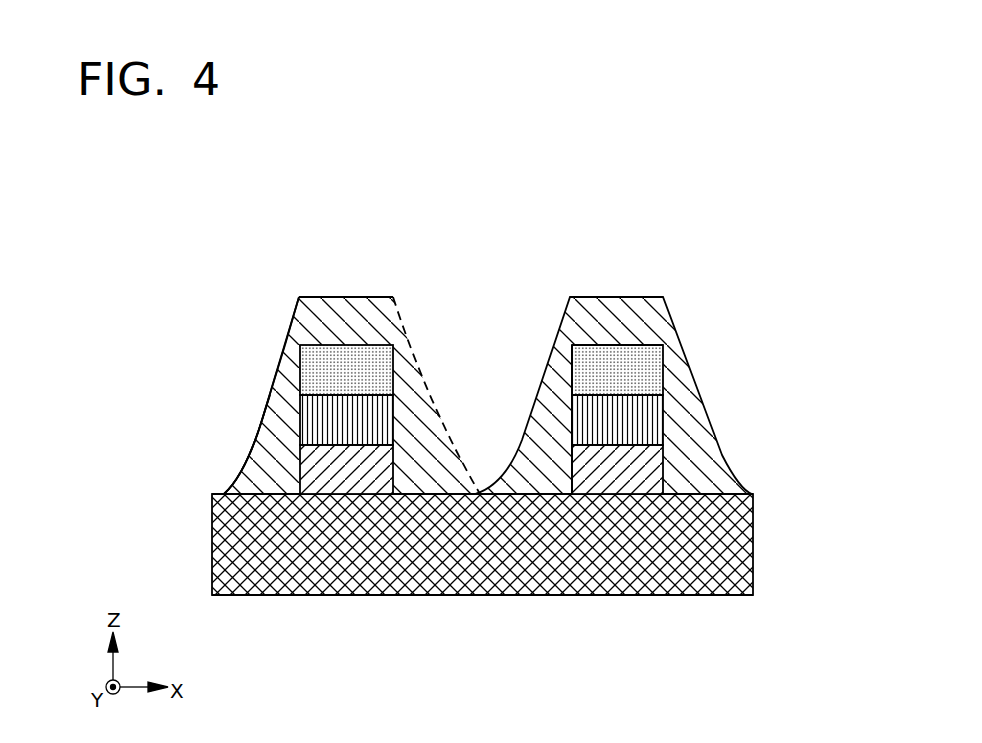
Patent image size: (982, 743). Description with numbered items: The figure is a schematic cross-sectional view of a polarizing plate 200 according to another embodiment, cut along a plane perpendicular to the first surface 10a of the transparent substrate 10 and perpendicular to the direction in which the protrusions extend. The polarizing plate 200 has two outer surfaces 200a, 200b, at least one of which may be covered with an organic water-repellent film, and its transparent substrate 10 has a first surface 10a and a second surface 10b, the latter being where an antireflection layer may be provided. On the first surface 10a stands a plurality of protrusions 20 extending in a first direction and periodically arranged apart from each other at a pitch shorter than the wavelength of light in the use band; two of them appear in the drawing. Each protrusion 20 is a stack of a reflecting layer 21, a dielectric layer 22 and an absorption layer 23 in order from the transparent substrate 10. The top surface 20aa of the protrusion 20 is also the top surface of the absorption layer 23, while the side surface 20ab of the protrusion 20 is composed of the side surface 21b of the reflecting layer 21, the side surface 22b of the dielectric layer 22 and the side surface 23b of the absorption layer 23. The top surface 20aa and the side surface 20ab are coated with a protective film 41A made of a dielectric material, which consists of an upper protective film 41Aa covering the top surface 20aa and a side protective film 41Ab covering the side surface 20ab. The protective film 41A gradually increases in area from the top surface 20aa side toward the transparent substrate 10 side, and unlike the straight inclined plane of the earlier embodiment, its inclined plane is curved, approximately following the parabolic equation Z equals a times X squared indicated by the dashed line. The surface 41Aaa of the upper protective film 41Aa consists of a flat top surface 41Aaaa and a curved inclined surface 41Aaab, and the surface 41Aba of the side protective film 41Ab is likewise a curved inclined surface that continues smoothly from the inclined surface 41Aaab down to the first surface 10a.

The polarizing plate 200 is at (732, 192).
The surface of the polarizing plate 200a is at (640, 297).
The surface of the polarizing plate 200b is at (712, 595).
The transparent substrate 10 is at (720, 548).
The first surface of the transparent substrate 10a is at (230, 487).
The second surface of the transparent substrate 10b is at (268, 595).
The protrusion 20 is at (642, 345).
The reflecting layer 21 is at (674, 456).
The dielectric layer 22 is at (645, 423).
The absorption layer 23 is at (645, 373).
The top surface of the protrusion 20aa is at (612, 347).
The side surface of the protrusion 20ab is at (582, 255).
The side surface of the reflecting layer 21b is at (570, 473).
The side surface of the dielectric layer 22b is at (570, 420).
The side surface of the absorption layer 23b is at (570, 368).
The protective film 41A is at (153, 300).
The upper protective film 41Aa is at (318, 327).
The side protective film 41Ab is at (283, 455).
The surface of the side protective film 41Aba is at (256, 450).
The surface of the upper protective film 41Aaa is at (398, 238).
The inclined surface 41Aaab is at (297, 307).
The top surface 41Aaaa is at (347, 297).